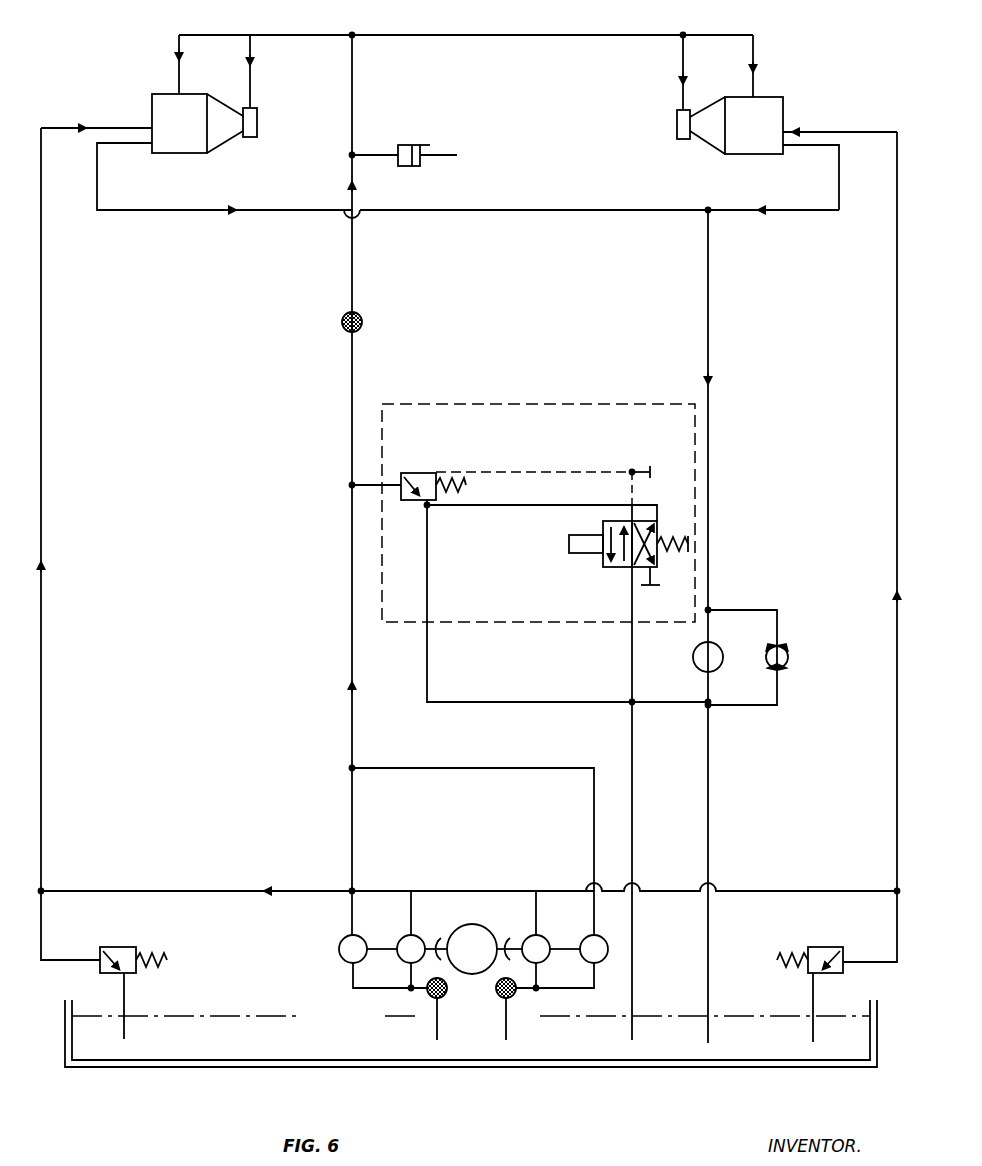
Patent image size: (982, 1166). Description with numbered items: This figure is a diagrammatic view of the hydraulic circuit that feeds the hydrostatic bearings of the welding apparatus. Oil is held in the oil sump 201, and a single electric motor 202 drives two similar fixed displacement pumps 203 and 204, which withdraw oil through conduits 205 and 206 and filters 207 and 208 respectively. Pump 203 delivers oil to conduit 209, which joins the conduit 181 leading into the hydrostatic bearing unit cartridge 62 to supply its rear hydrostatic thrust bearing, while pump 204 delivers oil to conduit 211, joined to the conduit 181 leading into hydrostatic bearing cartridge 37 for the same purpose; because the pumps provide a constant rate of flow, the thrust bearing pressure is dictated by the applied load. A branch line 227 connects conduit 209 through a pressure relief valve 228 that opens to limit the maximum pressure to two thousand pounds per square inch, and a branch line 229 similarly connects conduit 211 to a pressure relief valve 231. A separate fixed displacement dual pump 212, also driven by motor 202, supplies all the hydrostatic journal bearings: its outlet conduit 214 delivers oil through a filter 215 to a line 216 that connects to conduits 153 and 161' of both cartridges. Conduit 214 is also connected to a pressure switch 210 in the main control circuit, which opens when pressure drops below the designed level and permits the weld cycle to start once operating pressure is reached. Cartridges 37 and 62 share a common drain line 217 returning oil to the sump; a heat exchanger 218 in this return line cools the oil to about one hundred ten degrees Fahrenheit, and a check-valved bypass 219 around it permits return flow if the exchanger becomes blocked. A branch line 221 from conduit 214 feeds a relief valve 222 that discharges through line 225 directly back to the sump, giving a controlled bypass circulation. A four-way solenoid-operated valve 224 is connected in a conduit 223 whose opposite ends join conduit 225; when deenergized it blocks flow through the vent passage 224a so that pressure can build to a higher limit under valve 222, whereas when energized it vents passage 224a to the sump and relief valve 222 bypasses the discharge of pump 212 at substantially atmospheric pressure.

The line 216 is at (440, 35).
The conduit 161' is at (494, 66).
The conduit 153 is at (252, 80).
The conduit 181 is at (106, 128).
The hydrostatic bearing unit cartridge 62 is at (181, 140).
The pressure switch 210 is at (406, 166).
The common drain line 217 is at (530, 210).
The hydrostatic bearing cartridge 37 is at (757, 146).
The filter 215 is at (360, 313).
The branch line 221 is at (352, 492).
The relief valve 222 is at (430, 473).
The vent passage 224a is at (527, 472).
The conduit 223 is at (553, 505).
The four-way solenoid-operated valve 224 is at (652, 567).
The line 225 is at (427, 668).
The heat exchanger 218 is at (695, 665).
The check-valved bypass 219 is at (786, 652).
The outlet conduit 214 is at (353, 745).
The conduit 209 is at (207, 891).
The conduit 211 is at (775, 891).
The fixed displacement dual pump 212 is at (363, 936).
The fixed displacement pump 203 is at (416, 935).
The electric motor 202 is at (475, 924).
The fixed displacement pump 204 is at (548, 937).
The filter 207 is at (428, 993).
The filter 208 is at (516, 993).
The conduit 205 is at (438, 1036).
The conduit 206 is at (508, 1036).
The oil sump 201 is at (607, 1062).
The branch line 227 is at (42, 927).
The pressure relief valve 228 is at (116, 947).
The branch line 229 is at (897, 921).
The pressure relief valve 231 is at (805, 976).